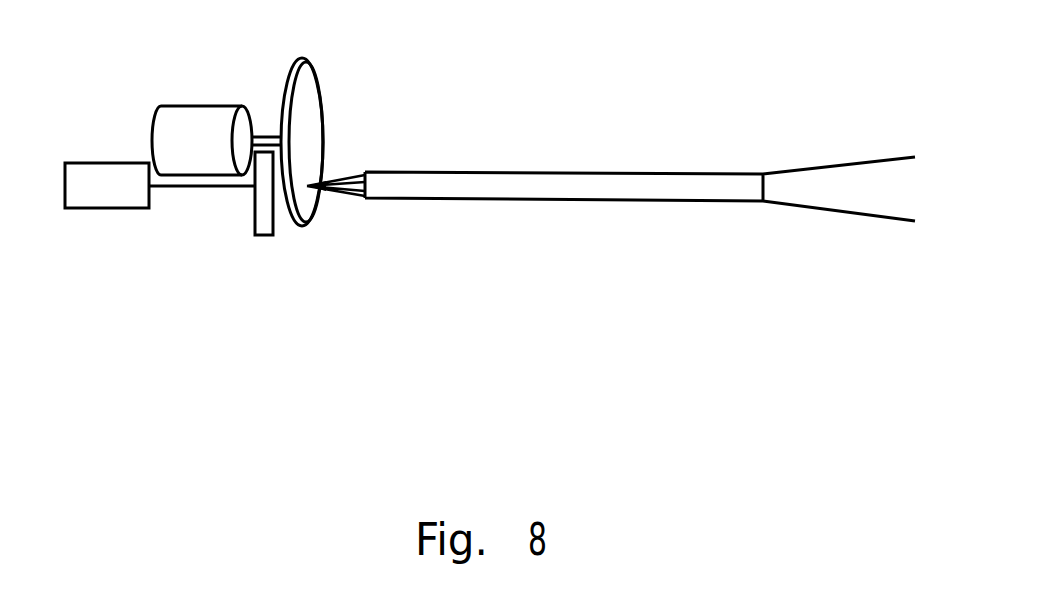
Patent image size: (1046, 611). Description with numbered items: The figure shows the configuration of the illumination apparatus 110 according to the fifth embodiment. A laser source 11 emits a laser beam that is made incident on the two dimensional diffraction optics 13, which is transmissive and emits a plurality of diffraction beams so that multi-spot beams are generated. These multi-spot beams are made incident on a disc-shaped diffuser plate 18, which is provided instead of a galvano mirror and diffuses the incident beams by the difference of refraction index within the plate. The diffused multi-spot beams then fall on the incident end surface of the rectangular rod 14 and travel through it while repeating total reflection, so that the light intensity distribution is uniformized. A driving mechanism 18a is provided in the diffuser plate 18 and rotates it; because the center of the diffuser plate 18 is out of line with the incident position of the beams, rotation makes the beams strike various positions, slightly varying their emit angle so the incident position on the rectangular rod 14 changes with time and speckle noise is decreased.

The laser source 11 is at (112, 200).
The two dimensional diffraction optics 13 is at (266, 232).
The rectangular rod 14 is at (673, 188).
The diffuser plate 18 is at (303, 217).
The driving mechanism 18a is at (203, 120).
The illumination apparatus 110 is at (837, 383).